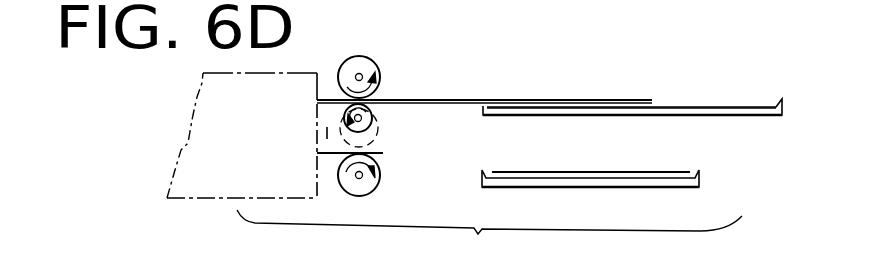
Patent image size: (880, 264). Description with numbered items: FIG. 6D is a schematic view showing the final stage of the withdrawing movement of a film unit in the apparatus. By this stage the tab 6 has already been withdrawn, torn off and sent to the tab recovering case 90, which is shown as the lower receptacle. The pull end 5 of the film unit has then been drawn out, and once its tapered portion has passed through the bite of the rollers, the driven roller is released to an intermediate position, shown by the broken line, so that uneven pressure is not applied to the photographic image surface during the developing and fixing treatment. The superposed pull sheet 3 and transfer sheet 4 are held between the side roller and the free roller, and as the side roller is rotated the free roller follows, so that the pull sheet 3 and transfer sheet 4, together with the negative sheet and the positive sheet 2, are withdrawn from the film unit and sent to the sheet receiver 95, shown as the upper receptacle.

The positive sheet 2 is at (332, 122).
The pull sheet 3 is at (422, 106).
The transfer sheet 4 is at (444, 99).
The pull end 5 is at (612, 100).
The tab 6 is at (592, 172).
The tab recovering case 90 is at (667, 187).
The sheet receiver 95 is at (740, 106).